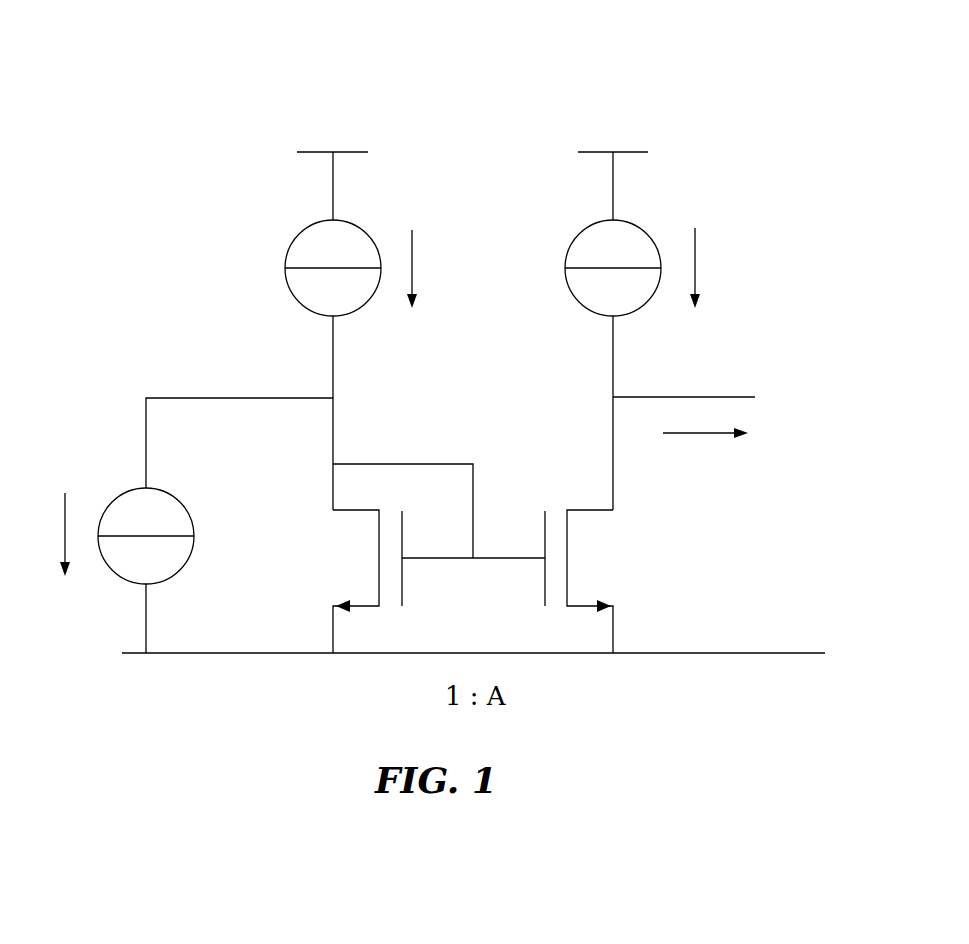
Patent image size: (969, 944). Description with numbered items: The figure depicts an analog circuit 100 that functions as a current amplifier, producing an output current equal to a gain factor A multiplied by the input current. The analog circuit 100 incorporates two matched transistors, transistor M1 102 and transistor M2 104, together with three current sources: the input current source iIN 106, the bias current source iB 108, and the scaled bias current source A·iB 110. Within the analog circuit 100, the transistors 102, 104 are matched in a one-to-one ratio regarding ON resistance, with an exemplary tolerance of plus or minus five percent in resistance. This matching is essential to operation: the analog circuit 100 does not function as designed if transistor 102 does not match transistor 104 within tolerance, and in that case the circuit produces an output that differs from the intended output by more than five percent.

The analog circuit 100 is at (141, 56).
The transistor M1 102 is at (315, 593).
The transistor M2 104 is at (618, 593).
The current source iIN 106 is at (128, 492).
The current source iB 108 is at (299, 235).
The current source A·iB 110 is at (579, 235).